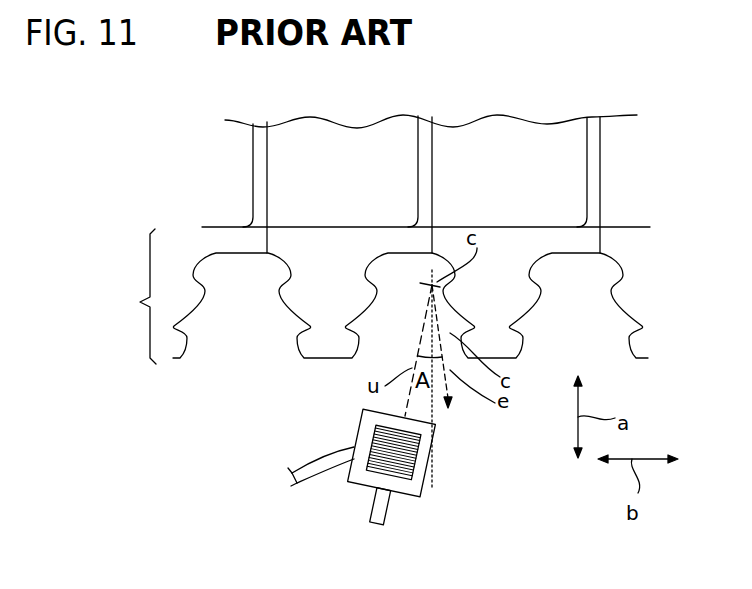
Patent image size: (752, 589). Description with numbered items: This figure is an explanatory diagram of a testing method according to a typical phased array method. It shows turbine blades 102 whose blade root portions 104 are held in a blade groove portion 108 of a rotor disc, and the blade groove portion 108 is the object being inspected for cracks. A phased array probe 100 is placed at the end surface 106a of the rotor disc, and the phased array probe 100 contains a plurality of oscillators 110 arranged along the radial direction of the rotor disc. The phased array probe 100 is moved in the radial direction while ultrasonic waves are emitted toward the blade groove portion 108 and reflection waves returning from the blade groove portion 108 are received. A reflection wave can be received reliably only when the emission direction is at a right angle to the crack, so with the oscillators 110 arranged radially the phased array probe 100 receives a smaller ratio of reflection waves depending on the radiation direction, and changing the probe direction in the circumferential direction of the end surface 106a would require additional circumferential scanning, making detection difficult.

The phased array probe 100 is at (347, 468).
The oscillator 110 is at (360, 442).
The turbine blade 102 is at (545, 163).
The blade root portion 104 is at (493, 277).
The end surface 106a is at (235, 447).
The blade groove portion 108 is at (125, 296).